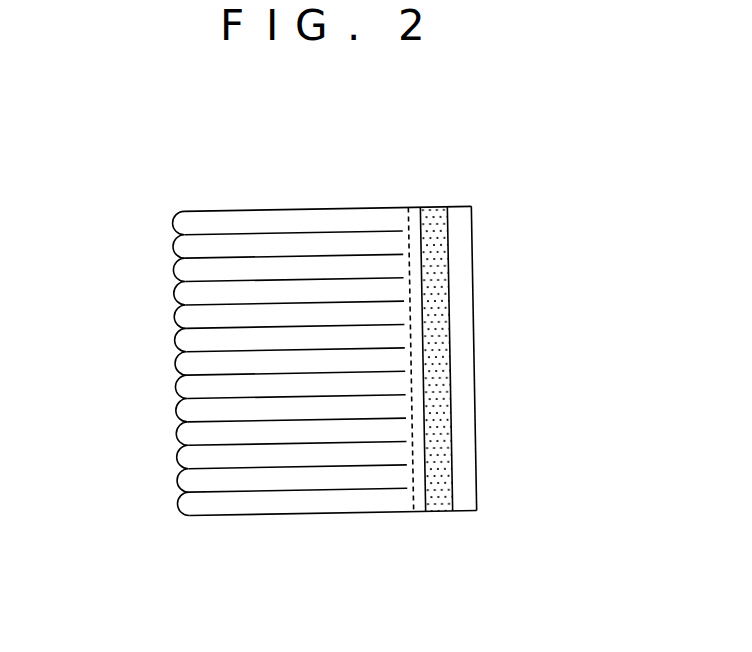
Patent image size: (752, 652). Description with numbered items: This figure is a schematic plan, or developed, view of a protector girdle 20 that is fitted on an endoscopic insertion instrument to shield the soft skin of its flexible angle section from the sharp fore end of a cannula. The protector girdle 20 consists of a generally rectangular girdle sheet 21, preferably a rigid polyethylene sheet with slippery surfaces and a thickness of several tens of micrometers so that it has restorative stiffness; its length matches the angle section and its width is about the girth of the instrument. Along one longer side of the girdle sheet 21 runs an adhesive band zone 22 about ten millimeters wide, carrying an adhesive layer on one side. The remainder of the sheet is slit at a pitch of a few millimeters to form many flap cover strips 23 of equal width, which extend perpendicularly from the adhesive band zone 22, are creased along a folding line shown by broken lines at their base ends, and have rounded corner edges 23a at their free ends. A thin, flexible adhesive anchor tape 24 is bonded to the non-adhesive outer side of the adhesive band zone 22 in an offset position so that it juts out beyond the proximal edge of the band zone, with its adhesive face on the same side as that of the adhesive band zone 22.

The protector girdle 20 is at (398, 199).
The girdle sheet 21 is at (328, 204).
The adhesive band zone 22 is at (458, 515).
The flap cover strips 23 is at (215, 242).
The rounded corner edges 23a is at (180, 270).
The adhesive anchor tape 24 is at (470, 415).